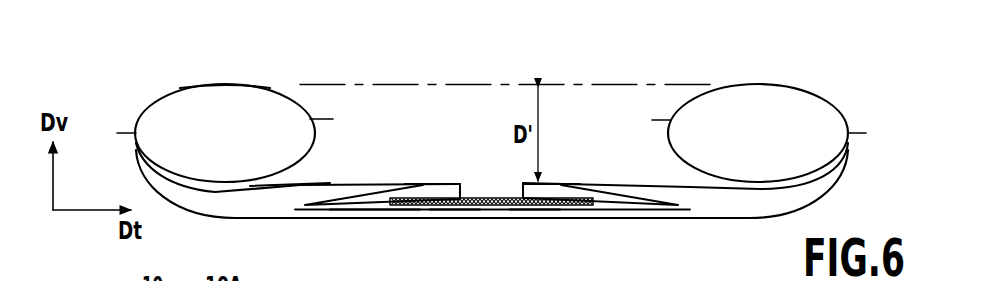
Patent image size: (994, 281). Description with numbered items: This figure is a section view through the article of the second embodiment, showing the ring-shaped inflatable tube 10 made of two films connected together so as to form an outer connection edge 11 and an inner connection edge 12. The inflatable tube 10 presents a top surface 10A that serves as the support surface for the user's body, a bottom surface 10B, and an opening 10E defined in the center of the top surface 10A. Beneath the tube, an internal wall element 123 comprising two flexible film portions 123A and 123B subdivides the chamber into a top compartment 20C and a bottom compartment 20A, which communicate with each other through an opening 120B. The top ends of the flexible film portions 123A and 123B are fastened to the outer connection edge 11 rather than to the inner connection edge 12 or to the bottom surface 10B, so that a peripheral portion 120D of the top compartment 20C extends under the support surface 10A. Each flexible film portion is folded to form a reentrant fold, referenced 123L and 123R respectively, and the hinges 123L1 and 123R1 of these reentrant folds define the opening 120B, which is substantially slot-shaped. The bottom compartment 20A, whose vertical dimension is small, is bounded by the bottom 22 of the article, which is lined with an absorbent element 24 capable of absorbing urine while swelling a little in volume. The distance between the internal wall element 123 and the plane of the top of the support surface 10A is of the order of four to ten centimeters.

The inflatable tube 10 is at (178, 87).
The top surface 10A is at (228, 83).
The bottom surface 10B is at (225, 184).
The opening 10E is at (567, 120).
The outer connection edge 11 is at (128, 132).
The inner connection edge 12 is at (324, 118).
The bottom compartment 20A is at (624, 202).
The top compartment 20C is at (662, 170).
The bottom 22 is at (368, 208).
The absorbent element 24 is at (492, 211).
The opening 120B is at (491, 180).
The peripheral portion 120D is at (263, 184).
The internal wall element 123 is at (311, 181).
The flexible film portion 123A is at (358, 182).
The flexible film portion 123B is at (613, 182).
The reentrant fold 123L is at (415, 182).
The hinge 123L1 is at (457, 211).
The reentrant fold 123R is at (563, 181).
The hinge 123R1 is at (533, 211).